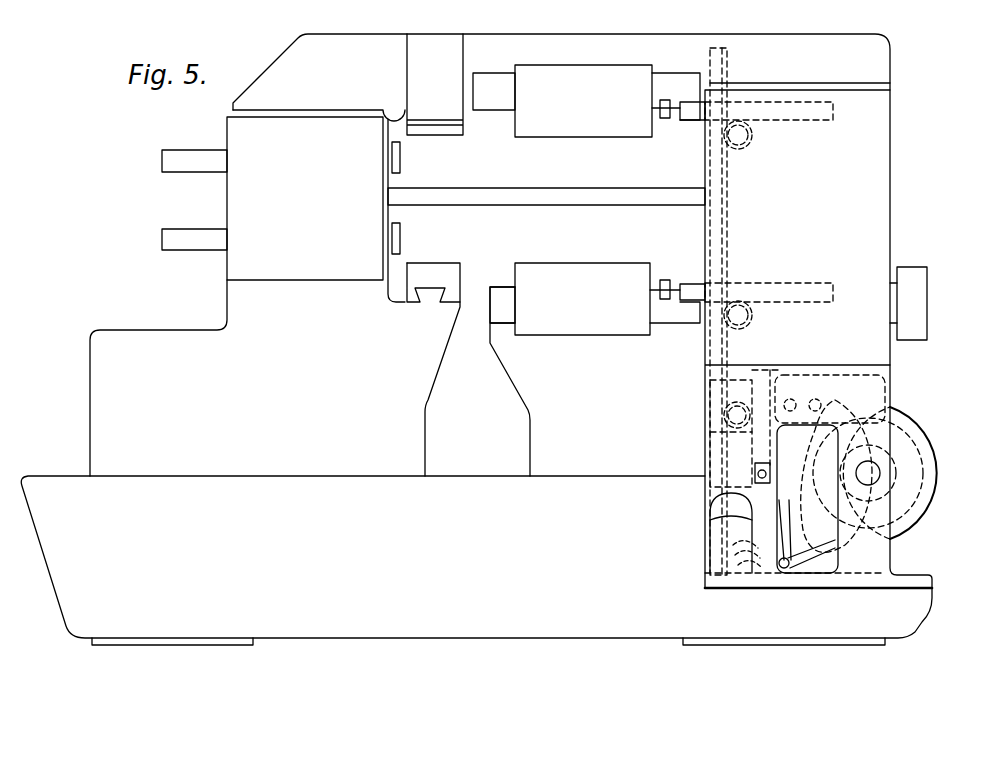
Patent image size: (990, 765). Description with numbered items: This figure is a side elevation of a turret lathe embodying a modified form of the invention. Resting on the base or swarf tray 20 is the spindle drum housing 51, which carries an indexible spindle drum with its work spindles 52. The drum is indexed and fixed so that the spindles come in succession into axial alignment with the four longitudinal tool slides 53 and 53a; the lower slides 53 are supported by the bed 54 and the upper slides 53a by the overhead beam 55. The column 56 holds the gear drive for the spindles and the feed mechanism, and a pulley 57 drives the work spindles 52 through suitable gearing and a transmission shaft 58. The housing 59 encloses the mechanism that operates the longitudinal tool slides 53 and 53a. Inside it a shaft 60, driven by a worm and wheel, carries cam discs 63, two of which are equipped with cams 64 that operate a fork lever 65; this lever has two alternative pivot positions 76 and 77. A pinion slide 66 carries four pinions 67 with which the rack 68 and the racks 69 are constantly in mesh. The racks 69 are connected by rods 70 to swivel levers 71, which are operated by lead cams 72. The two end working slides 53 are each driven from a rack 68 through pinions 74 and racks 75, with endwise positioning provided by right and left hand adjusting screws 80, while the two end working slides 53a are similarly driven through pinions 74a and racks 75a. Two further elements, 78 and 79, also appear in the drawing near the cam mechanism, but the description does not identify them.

The base or swarf tray 20 is at (75, 585).
The spindle drum housing 51 is at (316, 209).
The work spindles 52 is at (165, 160).
The longitudinal tool slides 53 is at (557, 270).
The longitudinal tool slides 53a is at (602, 138).
The bed 54 is at (542, 333).
The overhead beam 55 is at (672, 53).
The column 56 is at (797, 335).
The pulley 57 is at (912, 270).
The transmission shaft 58 is at (462, 196).
The housing 59 is at (855, 386).
The shaft 60 is at (880, 470).
The cam discs 63 is at (920, 537).
The cams 64 is at (915, 505).
The fork lever 65 is at (865, 422).
The pinion slide 66 is at (712, 385).
The pinions 67 is at (724, 410).
The rack 68 is at (720, 432).
The racks 69 is at (757, 452).
The rods 70 is at (770, 507).
The swivel levers 71 is at (840, 548).
The lead cams 72 is at (848, 455).
The pinions 74 is at (746, 305).
The pinions 74a is at (752, 140).
The racks 75 is at (812, 286).
The racks 75a is at (833, 118).
The pivot position 76 is at (790, 398).
The pivot position 77 is at (816, 398).
The cam wheel 78 is at (905, 478).
The spring 79 is at (808, 472).
The adjusting screws 80 is at (665, 118).